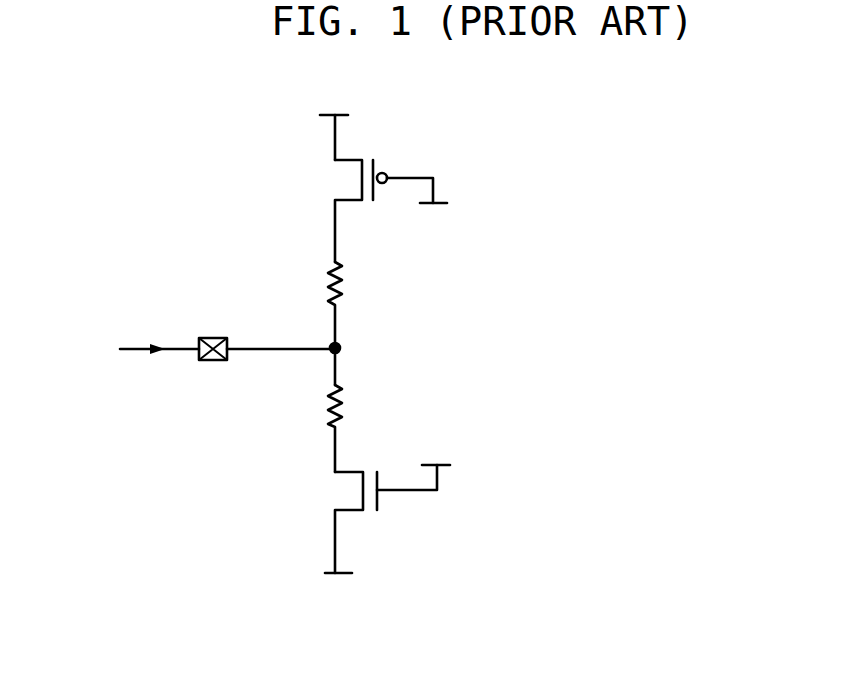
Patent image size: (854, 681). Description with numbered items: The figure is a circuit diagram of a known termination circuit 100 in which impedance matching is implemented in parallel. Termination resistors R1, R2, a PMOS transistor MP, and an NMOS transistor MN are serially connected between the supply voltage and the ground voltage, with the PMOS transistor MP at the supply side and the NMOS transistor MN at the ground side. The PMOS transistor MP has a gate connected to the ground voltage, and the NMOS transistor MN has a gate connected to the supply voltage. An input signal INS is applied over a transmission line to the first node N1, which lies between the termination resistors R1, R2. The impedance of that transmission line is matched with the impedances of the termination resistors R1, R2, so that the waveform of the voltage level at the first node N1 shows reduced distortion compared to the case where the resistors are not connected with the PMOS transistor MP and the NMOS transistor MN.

The termination circuit 100 is at (558, 121).
The PMOS transistor MP is at (384, 211).
The NMOS transistor MN is at (385, 502).
The termination resistor R1 is at (354, 323).
The termination resistor R2 is at (356, 428).
The first node N1 is at (355, 348).
The input signal INS is at (201, 352).